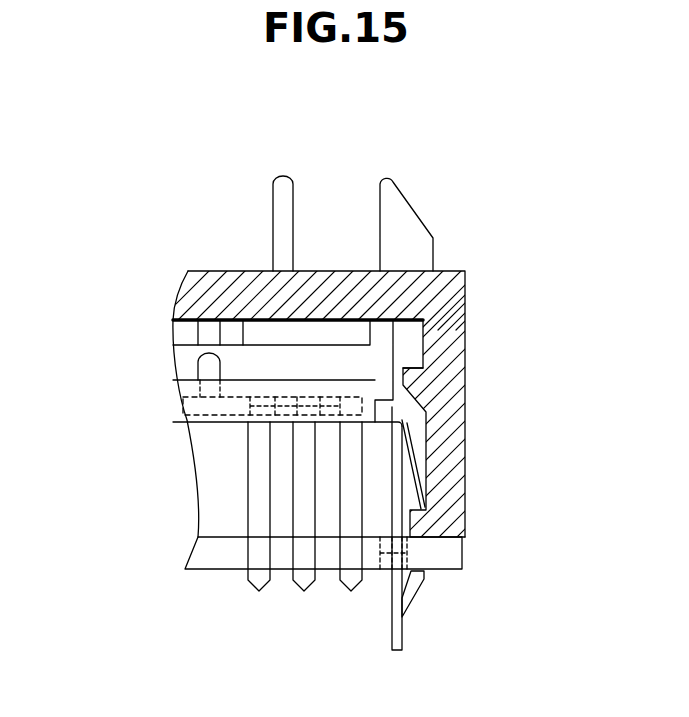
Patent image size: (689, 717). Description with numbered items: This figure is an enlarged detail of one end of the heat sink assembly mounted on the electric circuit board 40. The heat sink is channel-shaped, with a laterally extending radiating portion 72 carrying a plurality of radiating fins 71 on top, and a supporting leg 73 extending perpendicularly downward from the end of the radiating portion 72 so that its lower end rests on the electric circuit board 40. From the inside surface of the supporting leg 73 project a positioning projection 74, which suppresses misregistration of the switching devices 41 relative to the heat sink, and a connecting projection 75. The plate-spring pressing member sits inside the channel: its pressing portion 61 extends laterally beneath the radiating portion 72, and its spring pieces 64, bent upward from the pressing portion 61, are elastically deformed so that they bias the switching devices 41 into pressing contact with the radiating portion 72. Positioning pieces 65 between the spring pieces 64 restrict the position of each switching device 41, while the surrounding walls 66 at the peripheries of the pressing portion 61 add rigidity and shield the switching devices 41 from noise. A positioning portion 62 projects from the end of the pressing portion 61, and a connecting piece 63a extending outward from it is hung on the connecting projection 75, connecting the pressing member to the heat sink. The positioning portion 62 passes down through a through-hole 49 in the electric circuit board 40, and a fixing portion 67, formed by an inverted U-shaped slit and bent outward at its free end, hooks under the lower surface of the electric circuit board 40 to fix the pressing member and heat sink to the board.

The electric circuit board 40 is at (215, 552).
The switching devices 41 is at (337, 350).
The through-holes 49 is at (450, 573).
The pressing portion 61 is at (207, 418).
The positioning portions 62 is at (390, 513).
The connecting piece 63a is at (420, 467).
The spring pieces 64 is at (280, 395).
The positioning pieces 65 is at (203, 350).
The surrounding walls 66 is at (313, 377).
The fixing portion 67 is at (417, 633).
The radiating fins 71 is at (393, 185).
The radiating portion 72 is at (207, 273).
The supporting legs 73 is at (453, 440).
The positioning projection 74 is at (410, 377).
The connecting projection 75 is at (437, 543).